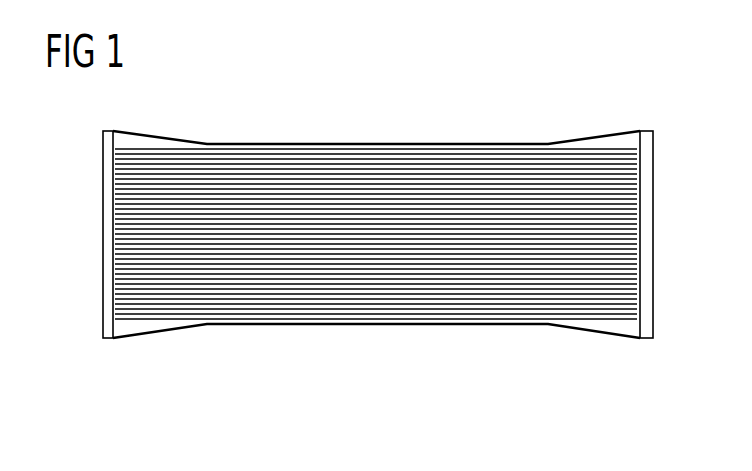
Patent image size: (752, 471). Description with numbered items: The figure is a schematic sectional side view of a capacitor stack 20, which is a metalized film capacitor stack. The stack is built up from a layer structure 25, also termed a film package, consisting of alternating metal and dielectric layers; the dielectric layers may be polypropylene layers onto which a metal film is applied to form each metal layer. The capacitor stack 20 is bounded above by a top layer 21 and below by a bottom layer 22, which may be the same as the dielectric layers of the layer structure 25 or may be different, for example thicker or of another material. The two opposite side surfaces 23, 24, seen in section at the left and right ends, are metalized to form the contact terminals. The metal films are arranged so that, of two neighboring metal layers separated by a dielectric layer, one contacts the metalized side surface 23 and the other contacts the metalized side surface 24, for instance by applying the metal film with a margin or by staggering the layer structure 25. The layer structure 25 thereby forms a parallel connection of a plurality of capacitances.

The capacitor stack 20 is at (375, 261).
The top layer 21 is at (350, 143).
The bottom layer 22 is at (362, 325).
The metalized side surface 23 is at (102, 242).
The metalized side surface 24 is at (648, 230).
The layer structure 25 is at (517, 350).